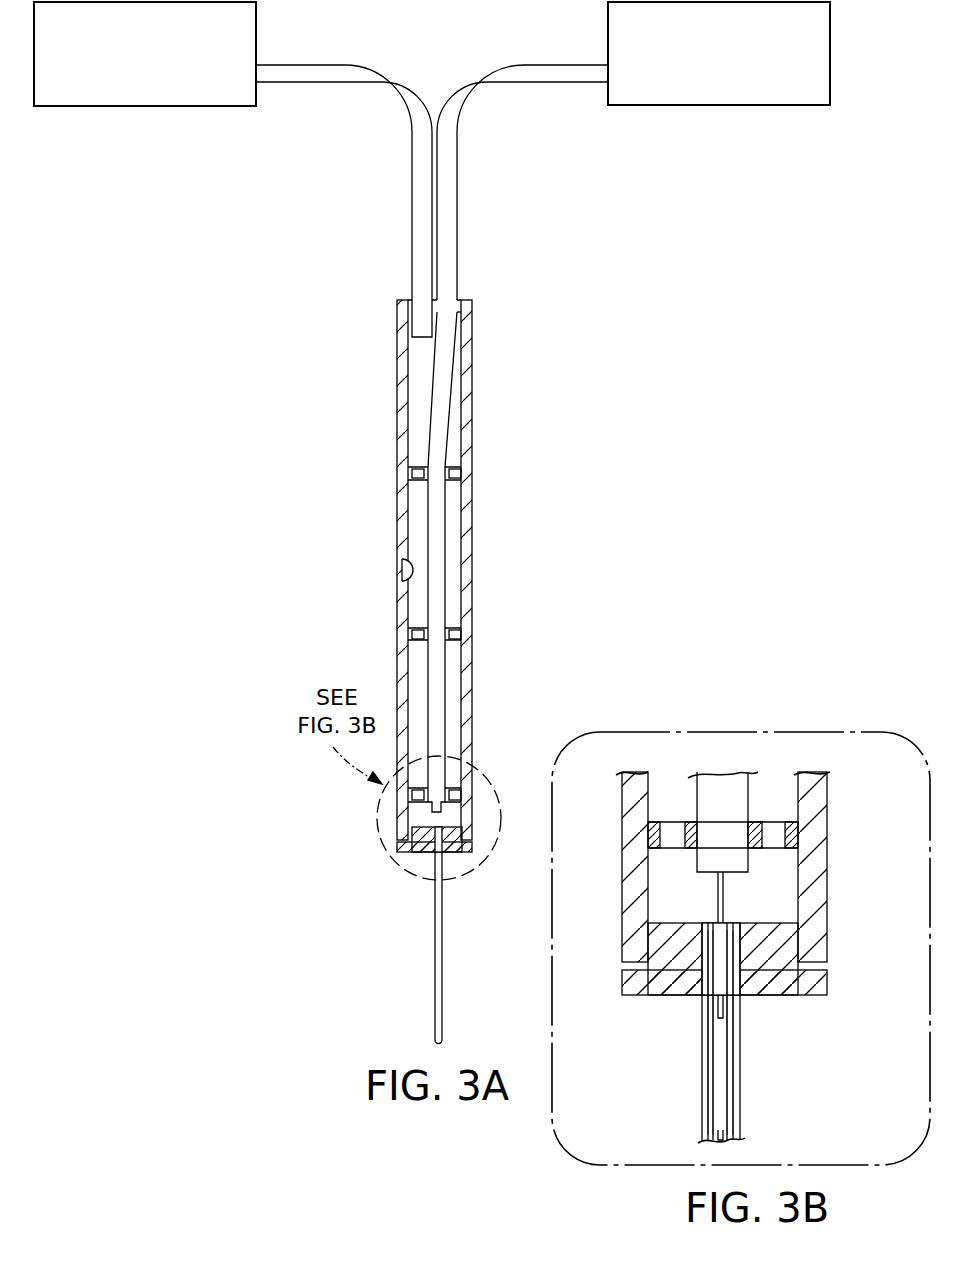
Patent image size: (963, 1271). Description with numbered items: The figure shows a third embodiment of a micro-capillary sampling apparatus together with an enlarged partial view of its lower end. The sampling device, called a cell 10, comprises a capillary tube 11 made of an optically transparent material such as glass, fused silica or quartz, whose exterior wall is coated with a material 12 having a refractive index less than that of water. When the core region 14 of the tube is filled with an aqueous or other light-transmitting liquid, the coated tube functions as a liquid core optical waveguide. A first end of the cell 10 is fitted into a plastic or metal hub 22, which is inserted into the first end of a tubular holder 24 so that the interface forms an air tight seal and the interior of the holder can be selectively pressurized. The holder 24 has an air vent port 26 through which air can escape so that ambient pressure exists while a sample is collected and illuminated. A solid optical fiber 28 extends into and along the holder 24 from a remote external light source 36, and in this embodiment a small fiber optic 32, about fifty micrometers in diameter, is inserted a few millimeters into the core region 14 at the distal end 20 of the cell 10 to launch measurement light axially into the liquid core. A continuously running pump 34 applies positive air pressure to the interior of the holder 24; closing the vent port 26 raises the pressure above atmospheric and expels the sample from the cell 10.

In FIG. 3A, the cell 10 is at (428, 958).
In FIG. 3B, the capillary tube 11 is at (722, 1145).
In FIG. 3B, the material 12 is at (702, 1045).
In FIG. 3B, the core region 14 is at (722, 1073).
In FIG. 3B, the distal end 20 is at (725, 923).
In FIG. 3A, the hub 22 is at (425, 855).
In FIG. 3B, the hub 22 is at (808, 995).
In FIG. 3A, the tubular holder 24 is at (472, 538).
In FIG. 3B, the tubular holder 24 is at (827, 910).
In FIG. 3A, the air vent port 26 is at (397, 570).
In FIG. 3A, the optical fiber 28 is at (472, 108).
In FIG. 3B, the optical fiber 28 is at (748, 797).
In FIG. 3B, the small fiber optic 32 is at (717, 895).
In FIG. 3A, the pump 34 is at (129, 83).
In FIG. 3A, the light source 36 is at (703, 83).